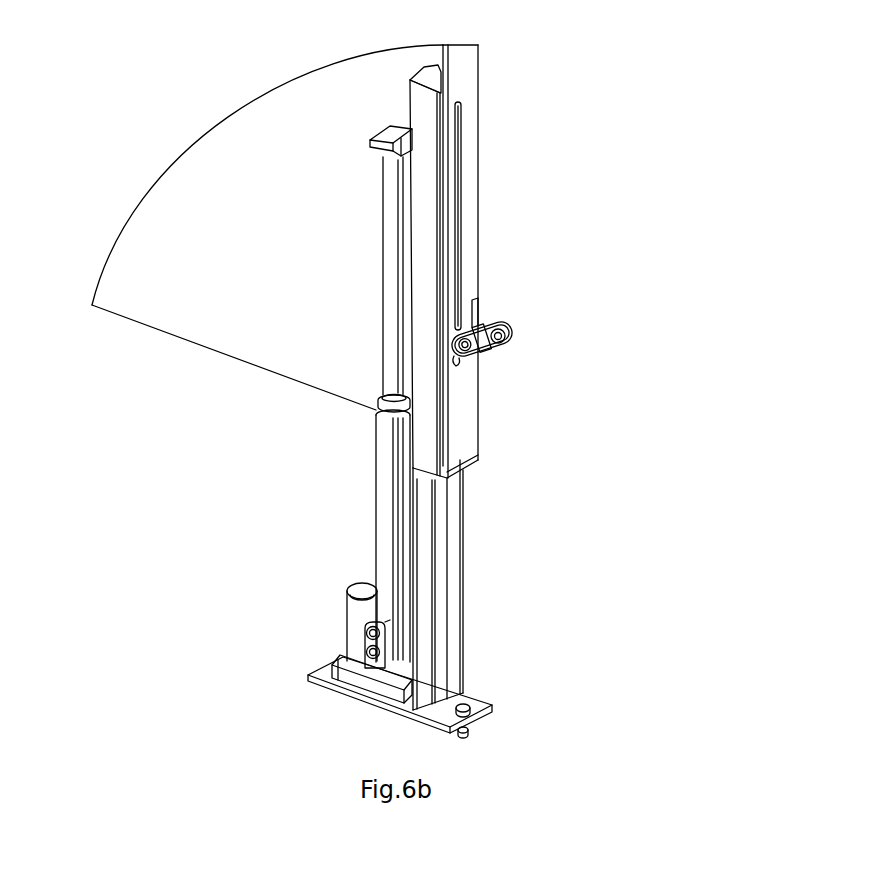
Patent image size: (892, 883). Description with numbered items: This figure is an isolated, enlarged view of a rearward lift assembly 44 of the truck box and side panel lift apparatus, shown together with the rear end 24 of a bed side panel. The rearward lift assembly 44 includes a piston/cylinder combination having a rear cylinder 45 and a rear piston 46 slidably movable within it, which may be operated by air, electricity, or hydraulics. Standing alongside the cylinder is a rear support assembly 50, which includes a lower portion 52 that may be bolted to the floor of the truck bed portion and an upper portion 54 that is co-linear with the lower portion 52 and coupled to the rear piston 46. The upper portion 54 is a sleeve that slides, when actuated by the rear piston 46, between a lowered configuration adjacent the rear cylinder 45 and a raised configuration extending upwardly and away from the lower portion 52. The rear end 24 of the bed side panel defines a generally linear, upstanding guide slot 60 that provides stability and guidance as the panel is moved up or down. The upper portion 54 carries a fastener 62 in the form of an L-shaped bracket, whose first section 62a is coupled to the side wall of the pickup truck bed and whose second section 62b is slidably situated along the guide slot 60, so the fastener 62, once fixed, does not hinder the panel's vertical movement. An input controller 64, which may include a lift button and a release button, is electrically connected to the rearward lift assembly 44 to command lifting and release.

The rear end 24 is at (470, 65).
The rearward lift assembly 44 is at (342, 446).
The rear cylinder 45 is at (385, 538).
The rear piston 46 is at (385, 177).
The rear support assembly 50 is at (435, 541).
The lower portion 52 is at (428, 630).
The upper portion 54 is at (428, 100).
The guide slot 60 is at (462, 250).
The fastener 62 is at (536, 314).
The first section 62a is at (513, 343).
The second section 62b is at (473, 303).
The input controller 64 is at (372, 670).